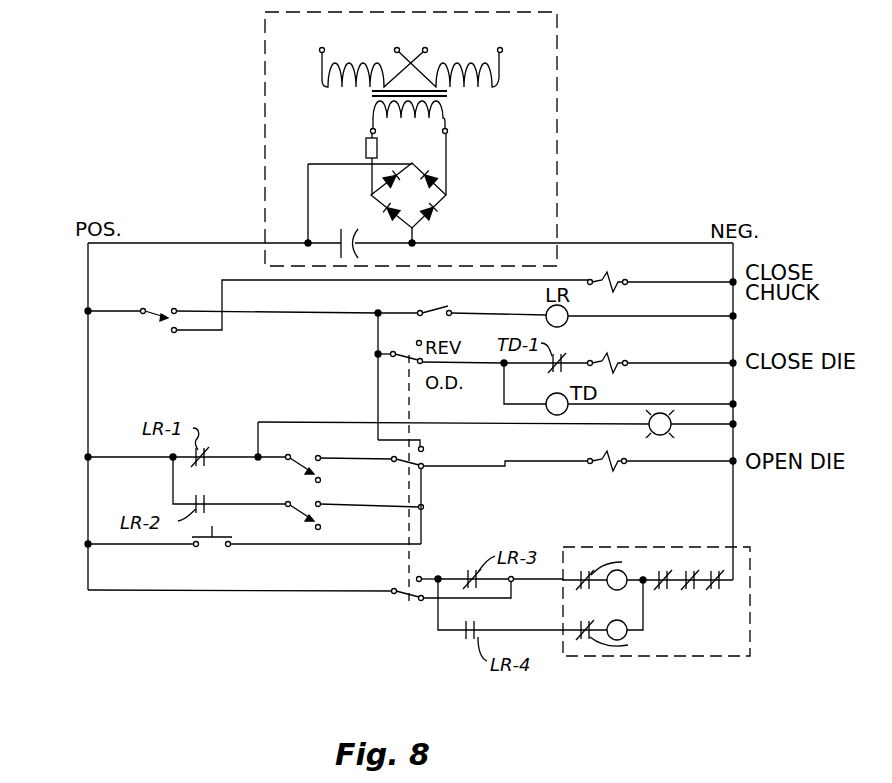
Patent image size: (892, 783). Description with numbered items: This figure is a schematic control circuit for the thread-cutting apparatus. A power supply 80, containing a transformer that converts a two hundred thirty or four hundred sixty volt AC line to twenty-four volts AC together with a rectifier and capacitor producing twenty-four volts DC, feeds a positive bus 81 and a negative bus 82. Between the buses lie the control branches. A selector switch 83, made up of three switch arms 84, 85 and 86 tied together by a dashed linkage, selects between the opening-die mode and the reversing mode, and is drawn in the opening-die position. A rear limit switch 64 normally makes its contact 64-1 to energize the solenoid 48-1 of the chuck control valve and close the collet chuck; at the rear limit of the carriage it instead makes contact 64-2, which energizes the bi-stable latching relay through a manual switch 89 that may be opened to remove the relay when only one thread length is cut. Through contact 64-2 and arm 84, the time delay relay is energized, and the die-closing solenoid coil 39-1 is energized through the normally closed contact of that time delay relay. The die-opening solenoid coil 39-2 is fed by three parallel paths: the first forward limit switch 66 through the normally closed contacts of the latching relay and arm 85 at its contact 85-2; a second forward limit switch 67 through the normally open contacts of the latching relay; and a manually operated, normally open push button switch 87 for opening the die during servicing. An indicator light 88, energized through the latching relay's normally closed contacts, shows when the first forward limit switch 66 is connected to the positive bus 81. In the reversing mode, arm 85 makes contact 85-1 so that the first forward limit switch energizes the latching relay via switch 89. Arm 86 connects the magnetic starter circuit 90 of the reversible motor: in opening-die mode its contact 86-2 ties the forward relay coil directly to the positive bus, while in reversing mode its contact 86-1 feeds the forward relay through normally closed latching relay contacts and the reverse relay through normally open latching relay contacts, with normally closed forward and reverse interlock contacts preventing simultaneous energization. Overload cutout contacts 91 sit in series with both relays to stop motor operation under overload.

The power supply 80 is at (557, 82).
The positive bus 81 is at (88, 280).
The negative bus 82 is at (736, 263).
The selector switch 83 is at (411, 405).
The selector switch arm 84 is at (402, 354).
The selector switch arm 85 is at (398, 463).
The switch contact 85-1 is at (425, 450).
The switch contact 85-2 is at (425, 470).
The selector switch arm 86 is at (398, 596).
The switch contact 86-1 is at (422, 576).
The switch contact 86-2 is at (420, 603).
The push button switch 87 is at (206, 548).
The indicator light 88 is at (648, 431).
The manual switch 89 is at (440, 308).
The magnetic starter circuit 90 is at (656, 625).
The overload cutout contacts 91 is at (707, 591).
The rear limit switch 64 is at (152, 320).
The rear limit switch contact 64-1 is at (176, 336).
The rear limit switch contact 64-2 is at (182, 288).
The first forward limit switch 66 is at (292, 469).
The switch 67 is at (294, 516).
The solenoid of the chuck control valve 48-1 is at (612, 277).
The solenoid coil 39-1 is at (612, 358).
The solenoid coil 39-2 is at (601, 467).